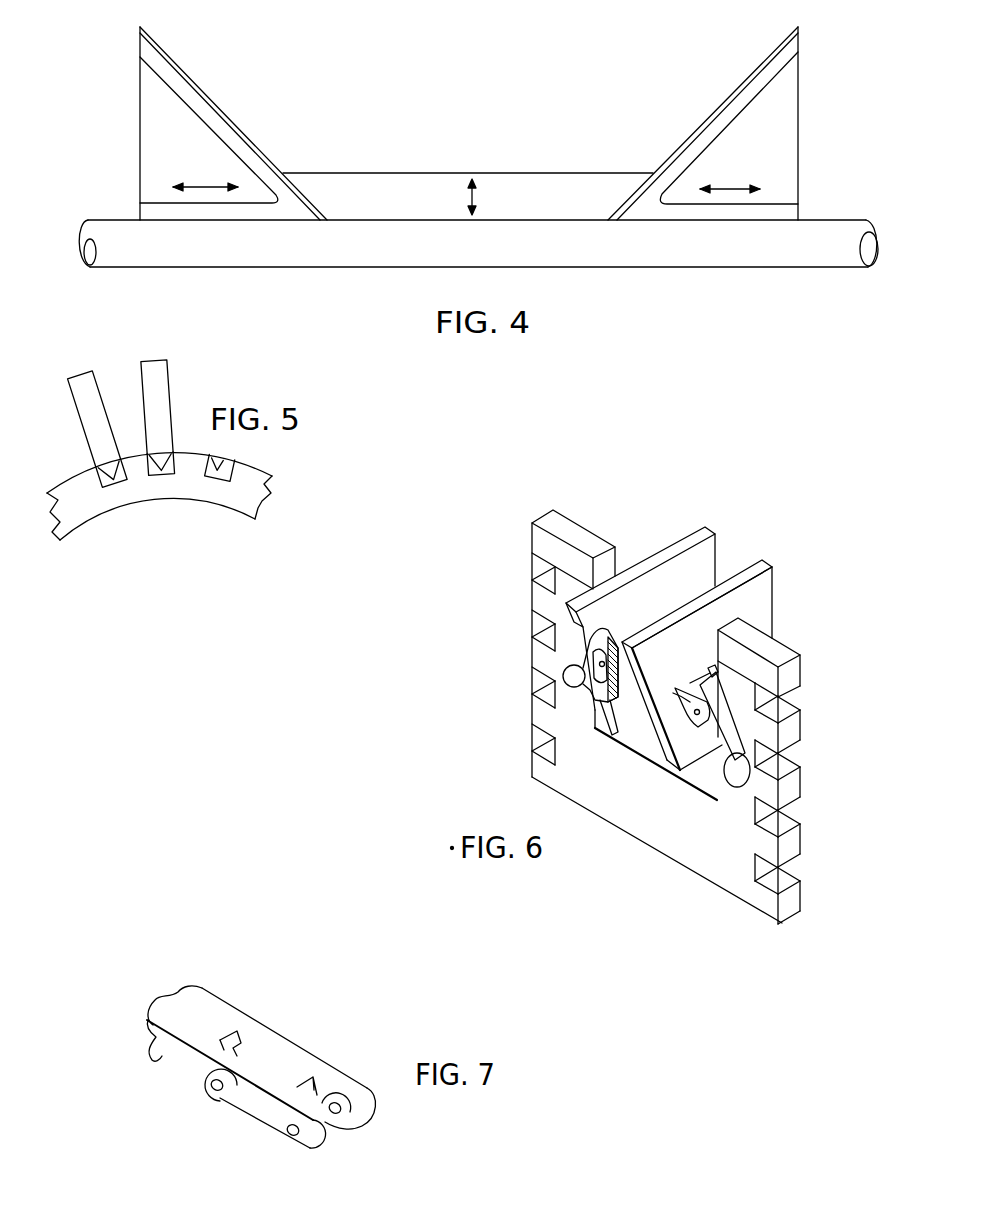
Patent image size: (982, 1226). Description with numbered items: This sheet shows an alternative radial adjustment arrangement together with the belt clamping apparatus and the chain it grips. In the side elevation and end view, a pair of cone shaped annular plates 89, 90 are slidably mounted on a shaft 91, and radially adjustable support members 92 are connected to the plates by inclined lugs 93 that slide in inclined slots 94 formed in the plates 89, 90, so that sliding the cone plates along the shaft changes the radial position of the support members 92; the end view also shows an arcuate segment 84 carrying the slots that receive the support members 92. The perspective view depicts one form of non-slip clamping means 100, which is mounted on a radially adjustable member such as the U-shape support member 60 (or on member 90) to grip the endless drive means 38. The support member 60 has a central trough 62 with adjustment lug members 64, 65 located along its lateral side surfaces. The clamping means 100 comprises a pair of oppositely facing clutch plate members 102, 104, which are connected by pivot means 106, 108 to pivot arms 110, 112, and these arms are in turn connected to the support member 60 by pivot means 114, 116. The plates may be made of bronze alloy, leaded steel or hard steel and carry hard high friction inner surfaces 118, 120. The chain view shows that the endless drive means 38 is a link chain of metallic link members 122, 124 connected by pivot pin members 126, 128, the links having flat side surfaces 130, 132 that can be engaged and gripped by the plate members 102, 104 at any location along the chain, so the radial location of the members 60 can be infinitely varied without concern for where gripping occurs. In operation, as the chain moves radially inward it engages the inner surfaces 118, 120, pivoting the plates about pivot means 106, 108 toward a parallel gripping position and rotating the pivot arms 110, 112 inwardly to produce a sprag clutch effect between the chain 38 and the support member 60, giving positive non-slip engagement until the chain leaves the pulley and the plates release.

In FIG. 4, the cone shaped annular plate 89 is at (148, 147).
In FIG. 4, the cone shaped annular plate 90 is at (790, 137).
In FIG. 4, the shaft 91 is at (417, 255).
In FIG. 4, the radially adjustable support member 92 is at (427, 187).
In FIG. 5, the radially adjustable support member 92 is at (65, 378).
In FIG. 5, the arcuate belt segment 84 is at (170, 488).
In FIG. 5, the inclined lug 93 is at (108, 478).
In FIG. 5, the inclined slot 94 is at (222, 468).
In FIG. 6, the U-shape support member 60 is at (663, 722).
In FIG. 6, the central trough 62 is at (643, 743).
In FIG. 6, the adjustment lug member 64 is at (532, 710).
In FIG. 6, the adjustment lug member 65 is at (797, 730).
In FIG. 6, the non-slip clamping means 100 is at (658, 692).
In FIG. 6, the clutch plate member 102 is at (713, 530).
In FIG. 6, the clutch plate member 104 is at (772, 566).
In FIG. 6, the pivot means 106 is at (603, 643).
In FIG. 6, the pivot means 108 is at (680, 767).
In FIG. 6, the pivot arm 110 is at (595, 683).
In FIG. 6, the pivot arm 112 is at (722, 748).
In FIG. 6, the pivot means 114 is at (558, 678).
In FIG. 6, the pivot means 116 is at (738, 782).
In FIG. 6, the hard high friction inner surface 118 is at (717, 540).
In FIG. 6, the hard high friction inner surface 120 is at (742, 567).
In FIG. 7, the endless drive means 38 is at (275, 1073).
In FIG. 7, the metallic link member 122 is at (200, 986).
In FIG. 7, the metallic link member 124 is at (372, 1116).
In FIG. 7, the pivot pin member 126 is at (212, 1088).
In FIG. 7, the pivot pin member 128 is at (295, 1140).
In FIG. 7, the flat side surface 130 is at (257, 1112).
In FIG. 7, the flat side surface 132 is at (327, 1060).